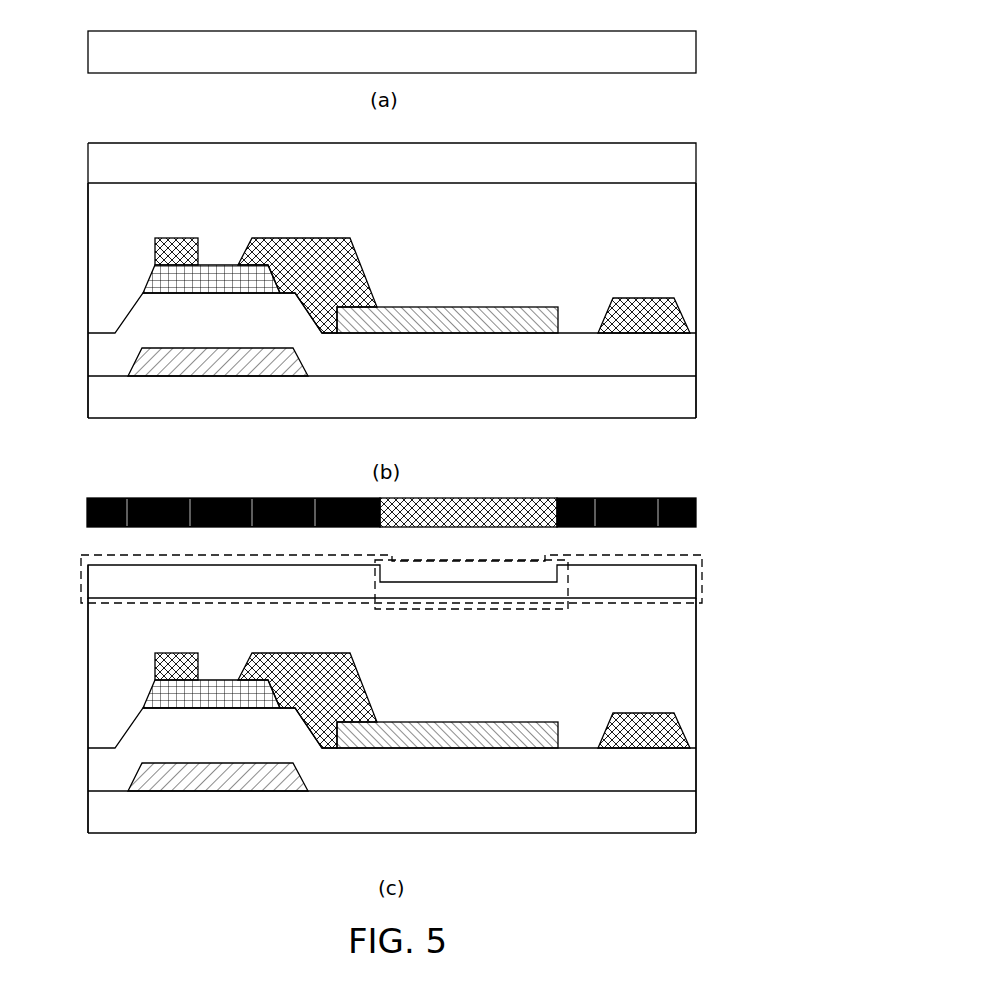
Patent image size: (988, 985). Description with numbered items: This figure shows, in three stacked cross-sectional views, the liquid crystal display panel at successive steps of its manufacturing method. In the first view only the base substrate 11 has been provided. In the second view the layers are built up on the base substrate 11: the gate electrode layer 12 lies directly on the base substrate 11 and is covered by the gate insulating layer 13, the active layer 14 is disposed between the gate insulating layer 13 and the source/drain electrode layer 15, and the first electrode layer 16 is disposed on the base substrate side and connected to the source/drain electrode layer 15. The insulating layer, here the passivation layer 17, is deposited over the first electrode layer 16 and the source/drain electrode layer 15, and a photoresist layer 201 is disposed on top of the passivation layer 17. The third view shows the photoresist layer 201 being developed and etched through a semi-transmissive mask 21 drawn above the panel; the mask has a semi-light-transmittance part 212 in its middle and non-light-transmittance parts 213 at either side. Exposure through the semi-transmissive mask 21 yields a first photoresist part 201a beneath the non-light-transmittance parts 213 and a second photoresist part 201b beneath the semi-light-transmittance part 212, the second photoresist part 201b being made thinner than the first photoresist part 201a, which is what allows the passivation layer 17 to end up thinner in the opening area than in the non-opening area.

The base substrate 11 is at (100, 53).
The gate electrode layer 12 is at (148, 360).
The gate insulating layer 13 is at (113, 348).
The active layer 14 is at (163, 280).
The source/drain electrode layer 15 is at (163, 250).
The first electrode layer 16 is at (440, 328).
The passivation layer 17 is at (113, 210).
The photoresist layer 201 is at (97, 163).
The first photoresist part 201a is at (703, 555).
The second photoresist part 201b is at (568, 609).
The semi-transmissive mask 21 is at (419, 492).
The semi-light-transmittance part 212 is at (535, 510).
The non-light-transmittance part 213 is at (687, 512).